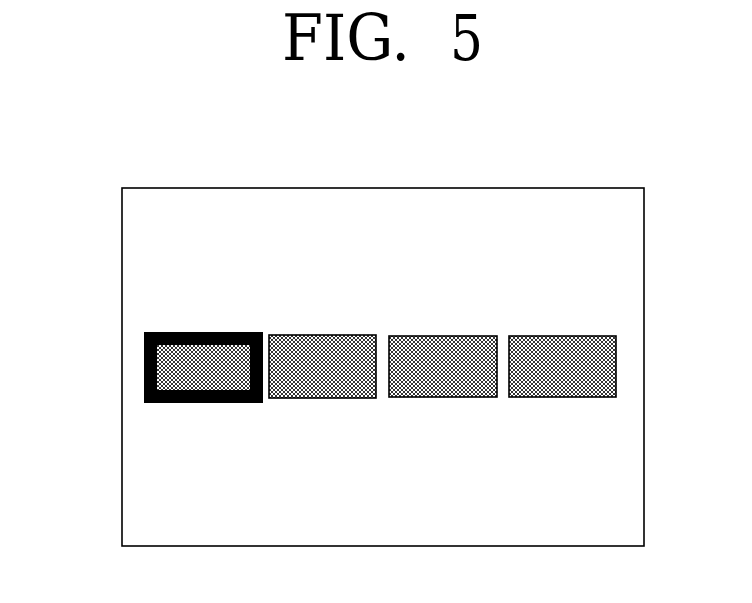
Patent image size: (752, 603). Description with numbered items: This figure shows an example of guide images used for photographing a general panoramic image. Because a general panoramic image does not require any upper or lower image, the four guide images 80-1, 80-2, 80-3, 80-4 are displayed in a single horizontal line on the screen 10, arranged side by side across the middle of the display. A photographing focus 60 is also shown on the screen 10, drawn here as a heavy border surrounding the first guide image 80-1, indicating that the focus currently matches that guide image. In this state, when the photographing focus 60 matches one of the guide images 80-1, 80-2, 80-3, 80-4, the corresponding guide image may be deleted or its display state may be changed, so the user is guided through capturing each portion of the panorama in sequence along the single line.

The screen 10 is at (143, 188).
The photographing focus 60 is at (145, 342).
The guide image 80-1 is at (158, 332).
The guide image 80-2 is at (311, 335).
The guide image 80-3 is at (473, 336).
The guide image 80-4 is at (584, 336).